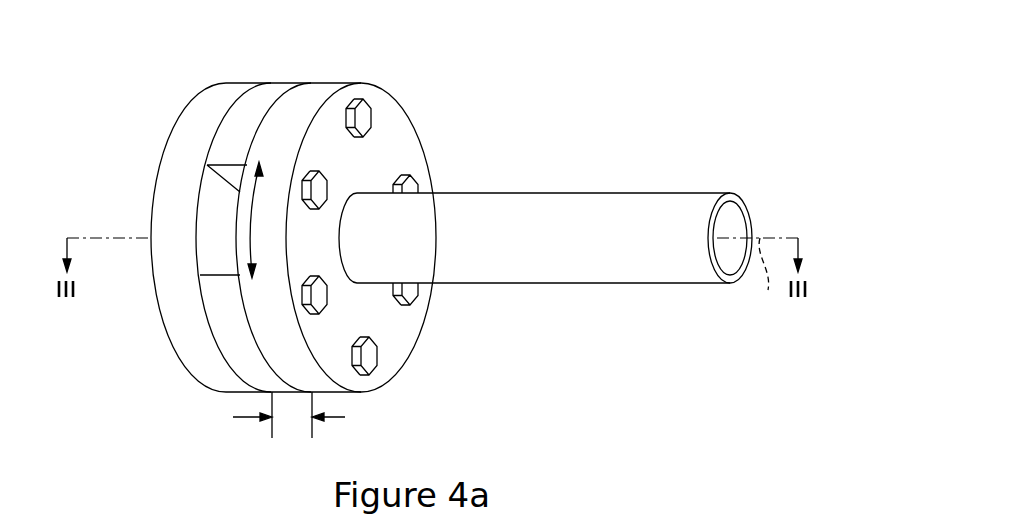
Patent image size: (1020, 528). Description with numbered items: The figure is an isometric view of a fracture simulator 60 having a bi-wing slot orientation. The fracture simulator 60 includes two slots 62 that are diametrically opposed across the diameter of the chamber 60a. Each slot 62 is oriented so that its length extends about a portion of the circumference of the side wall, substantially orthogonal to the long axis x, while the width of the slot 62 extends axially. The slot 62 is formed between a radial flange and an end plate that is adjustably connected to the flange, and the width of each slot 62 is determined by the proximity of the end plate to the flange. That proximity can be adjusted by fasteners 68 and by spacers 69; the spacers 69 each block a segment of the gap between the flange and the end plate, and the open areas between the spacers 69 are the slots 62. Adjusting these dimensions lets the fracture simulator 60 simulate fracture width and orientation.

The fracture simulator 60 is at (659, 48).
The chamber 60a is at (730, 218).
The slot 62 is at (217, 222).
The fasteners 68 is at (367, 119).
The spacers 69 is at (272, 93).